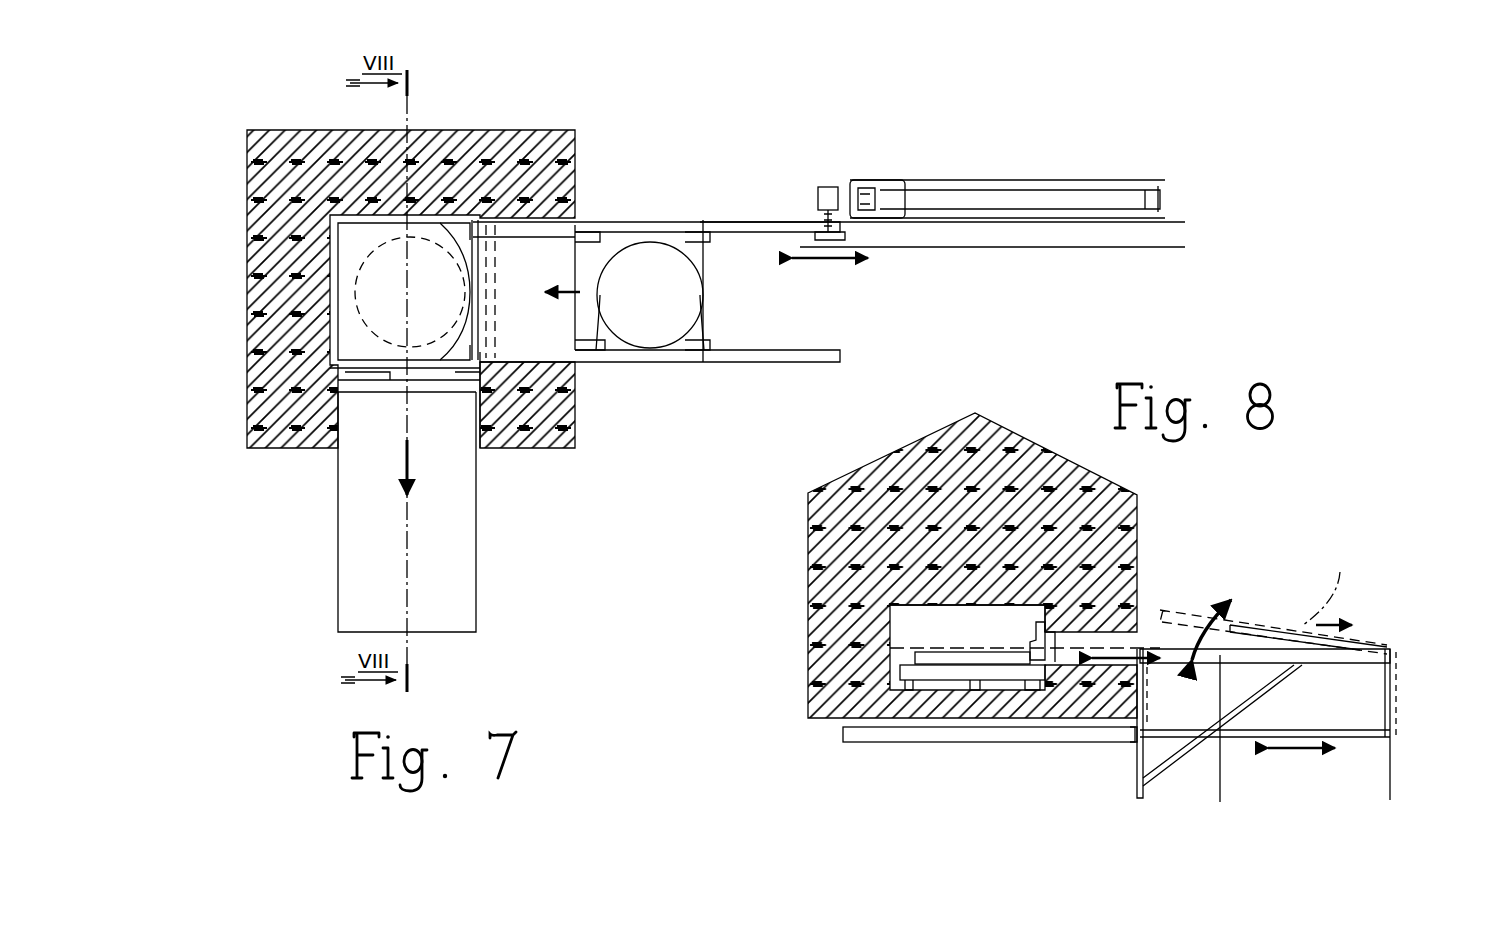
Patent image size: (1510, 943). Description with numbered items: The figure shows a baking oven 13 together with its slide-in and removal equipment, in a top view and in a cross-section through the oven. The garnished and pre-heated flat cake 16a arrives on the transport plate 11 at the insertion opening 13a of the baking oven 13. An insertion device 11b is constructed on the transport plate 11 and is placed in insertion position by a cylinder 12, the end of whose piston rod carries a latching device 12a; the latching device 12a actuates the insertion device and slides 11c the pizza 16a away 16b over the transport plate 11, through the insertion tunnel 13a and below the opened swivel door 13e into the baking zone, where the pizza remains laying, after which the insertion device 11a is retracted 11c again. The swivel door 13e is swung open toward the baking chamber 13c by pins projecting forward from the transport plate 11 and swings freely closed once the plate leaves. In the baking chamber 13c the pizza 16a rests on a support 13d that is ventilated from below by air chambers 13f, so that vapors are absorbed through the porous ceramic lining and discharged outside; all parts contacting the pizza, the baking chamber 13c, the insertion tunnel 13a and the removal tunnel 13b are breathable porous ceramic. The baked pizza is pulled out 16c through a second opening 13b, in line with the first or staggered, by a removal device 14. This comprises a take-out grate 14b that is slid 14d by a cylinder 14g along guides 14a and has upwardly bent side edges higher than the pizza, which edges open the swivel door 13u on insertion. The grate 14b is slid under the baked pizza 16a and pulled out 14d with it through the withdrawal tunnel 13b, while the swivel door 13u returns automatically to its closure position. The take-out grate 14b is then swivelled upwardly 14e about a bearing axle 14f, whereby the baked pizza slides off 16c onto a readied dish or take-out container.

In FIG. 7, the transport plate 11 is at (668, 355).
In FIG. 7, the insertion device 11a is at (703, 253).
In FIG. 7, the insertion device 11b is at (782, 235).
In FIG. 7, the sliding motion of the insertion device 11c is at (830, 268).
In FIG. 7, the cylinder 12 is at (1115, 195).
In FIG. 7, the latching device 12a is at (830, 185).
In FIG. 7, the baking oven 13 is at (297, 126).
In FIG. 8, the baking oven 13 is at (918, 436).
In FIG. 7, the insertion opening 13a is at (527, 222).
In FIG. 7, the second opening 13b is at (503, 453).
In FIG. 8, the baking chamber 13c is at (930, 608).
In FIG. 8, the support 13d is at (900, 668).
In FIG. 7, the swivel door 13e is at (490, 225).
In FIG. 8, the air chambers 13f is at (932, 745).
In FIG. 7, the swivel door 13u is at (340, 375).
In FIG. 8, the swivel door 13u is at (1140, 592).
In FIG. 7, the removal device 14 is at (482, 570).
In FIG. 8, the removal device 14 is at (1404, 715).
In FIG. 8, the guides 14a is at (1220, 802).
In FIG. 8, the take-out grate 14b is at (1340, 572).
In FIG. 8, the sliding motion of the grate 14d is at (1137, 796).
In FIG. 8, the upward swivelling of the grate 14e is at (1215, 610).
In FIG. 8, the bearing axle 14f is at (1390, 800).
In FIG. 8, the cylinder 14g is at (995, 742).
In FIG. 7, the flat cake 16a is at (380, 293).
In FIG. 8, the flat cake 16a is at (950, 650).
In FIG. 7, the sliding away of the pizza 16b is at (575, 268).
In FIG. 7, the pulling out of the baked pizza 16c is at (398, 487).
In FIG. 8, the pulling out of the baked pizza 16c is at (1348, 618).